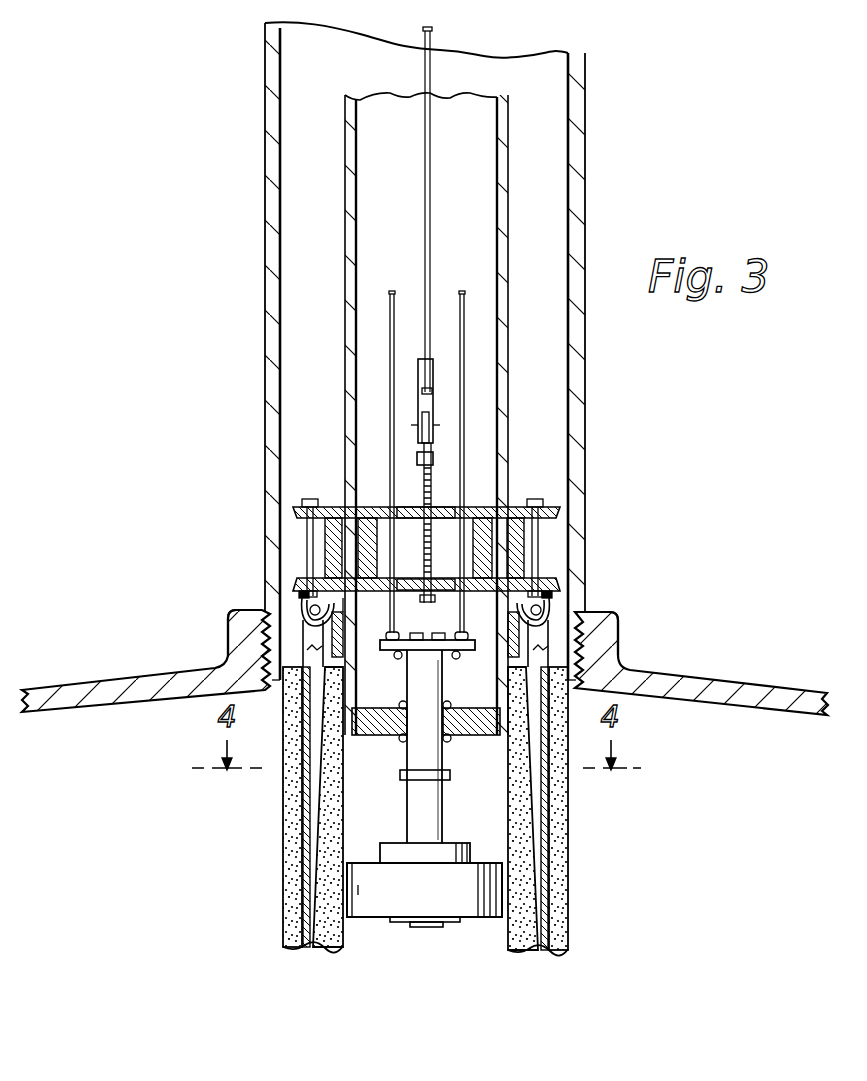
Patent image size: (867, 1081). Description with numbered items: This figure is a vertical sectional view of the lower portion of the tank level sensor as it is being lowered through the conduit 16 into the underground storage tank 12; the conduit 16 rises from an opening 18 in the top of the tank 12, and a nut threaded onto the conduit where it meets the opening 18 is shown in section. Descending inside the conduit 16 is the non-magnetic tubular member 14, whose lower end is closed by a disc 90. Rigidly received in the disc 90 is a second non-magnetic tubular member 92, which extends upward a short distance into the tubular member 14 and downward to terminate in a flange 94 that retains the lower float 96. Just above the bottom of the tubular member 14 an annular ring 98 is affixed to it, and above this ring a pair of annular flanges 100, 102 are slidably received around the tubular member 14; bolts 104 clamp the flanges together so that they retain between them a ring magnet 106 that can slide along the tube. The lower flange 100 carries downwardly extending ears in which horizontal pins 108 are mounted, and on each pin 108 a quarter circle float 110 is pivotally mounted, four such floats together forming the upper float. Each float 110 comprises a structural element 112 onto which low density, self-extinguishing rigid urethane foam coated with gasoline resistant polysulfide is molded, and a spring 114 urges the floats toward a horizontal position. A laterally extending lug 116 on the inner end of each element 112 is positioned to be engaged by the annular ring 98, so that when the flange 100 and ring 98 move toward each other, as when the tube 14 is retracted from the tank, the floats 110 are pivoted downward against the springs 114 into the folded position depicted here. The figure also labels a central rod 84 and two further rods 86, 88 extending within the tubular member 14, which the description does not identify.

The storage tank 12 is at (725, 675).
The tubular member 14 is at (505, 172).
The conduit 16 is at (578, 114).
The opening 18 is at (588, 655).
The actuating rod 84 is at (431, 43).
The rod 86 is at (394, 293).
The rod 88 is at (464, 293).
The disc 90 is at (464, 737).
The tubular member 92 is at (443, 793).
The flange 94 is at (402, 927).
The float 96 is at (485, 920).
The annular ring 98 is at (520, 637).
The lower annular flange 100 is at (552, 583).
The upper annular flange 102 is at (557, 512).
The bolts 104 is at (312, 540).
The ring magnet 106 is at (325, 553).
The pins 108 is at (302, 612).
The quarter circle float 110 is at (282, 842).
The structural element 112 is at (305, 872).
The spring 114 is at (332, 640).
The lug 116 is at (343, 600).